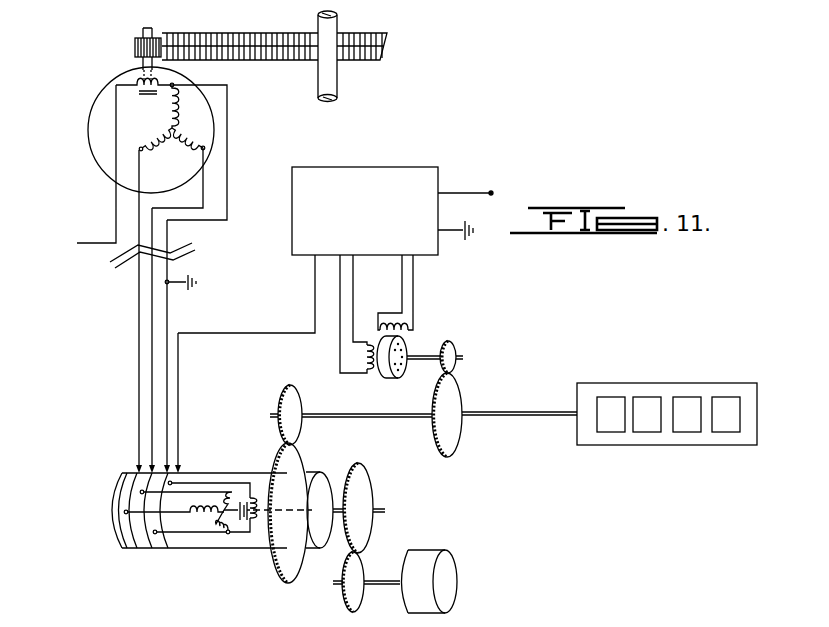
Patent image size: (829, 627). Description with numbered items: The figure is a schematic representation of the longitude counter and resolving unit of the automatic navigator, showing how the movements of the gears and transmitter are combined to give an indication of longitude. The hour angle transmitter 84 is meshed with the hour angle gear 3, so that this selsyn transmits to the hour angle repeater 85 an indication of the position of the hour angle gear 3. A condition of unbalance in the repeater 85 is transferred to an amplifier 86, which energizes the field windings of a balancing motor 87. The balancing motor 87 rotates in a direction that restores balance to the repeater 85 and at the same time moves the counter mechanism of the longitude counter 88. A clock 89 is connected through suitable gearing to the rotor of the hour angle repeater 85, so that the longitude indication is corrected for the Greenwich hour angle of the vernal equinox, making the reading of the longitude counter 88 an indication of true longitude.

The hour angle gear 3 is at (225, 34).
The hour angle transmitter 84 is at (95, 139).
The hour angle repeater 85 is at (113, 503).
The amplifier 86 is at (372, 217).
The balancing motor 87 is at (405, 343).
The longitude counter 88 is at (588, 389).
The clock 89 is at (428, 558).